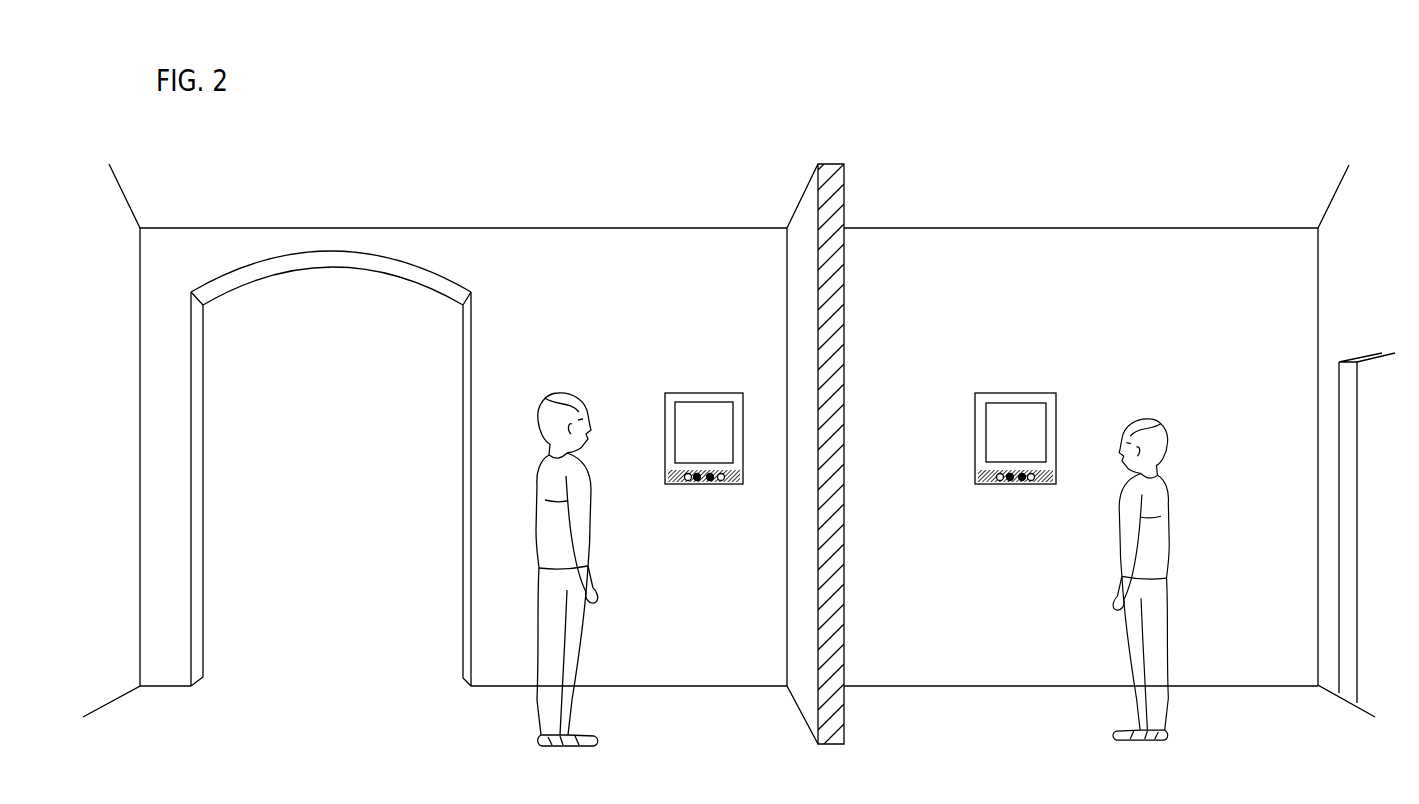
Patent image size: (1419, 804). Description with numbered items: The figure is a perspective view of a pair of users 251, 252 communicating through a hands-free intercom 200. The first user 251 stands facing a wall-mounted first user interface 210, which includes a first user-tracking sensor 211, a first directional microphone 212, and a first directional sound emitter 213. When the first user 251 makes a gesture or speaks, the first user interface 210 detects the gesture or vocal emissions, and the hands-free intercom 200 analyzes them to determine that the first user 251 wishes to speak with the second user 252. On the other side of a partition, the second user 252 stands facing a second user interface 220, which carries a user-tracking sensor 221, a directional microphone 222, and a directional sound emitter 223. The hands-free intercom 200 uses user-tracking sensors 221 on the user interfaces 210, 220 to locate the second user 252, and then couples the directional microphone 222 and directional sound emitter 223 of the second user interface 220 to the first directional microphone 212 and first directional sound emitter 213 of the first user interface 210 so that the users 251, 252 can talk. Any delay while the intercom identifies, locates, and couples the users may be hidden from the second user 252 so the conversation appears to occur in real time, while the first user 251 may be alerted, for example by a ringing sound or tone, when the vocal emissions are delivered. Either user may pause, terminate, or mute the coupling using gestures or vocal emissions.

The hands-free intercom 200 is at (1048, 291).
The first user interface 210 is at (700, 392).
The first user-tracking sensor 211 is at (693, 486).
The first directional microphone 212 is at (710, 486).
The first directional sound emitter 213 is at (675, 486).
The second user interface 220 is at (1013, 392).
The user-tracking sensor 221 is at (1005, 486).
The directional microphone 222 is at (1022, 486).
The directional sound emitter 223 is at (988, 486).
The first user 251 is at (557, 392).
The second user 252 is at (1148, 416).